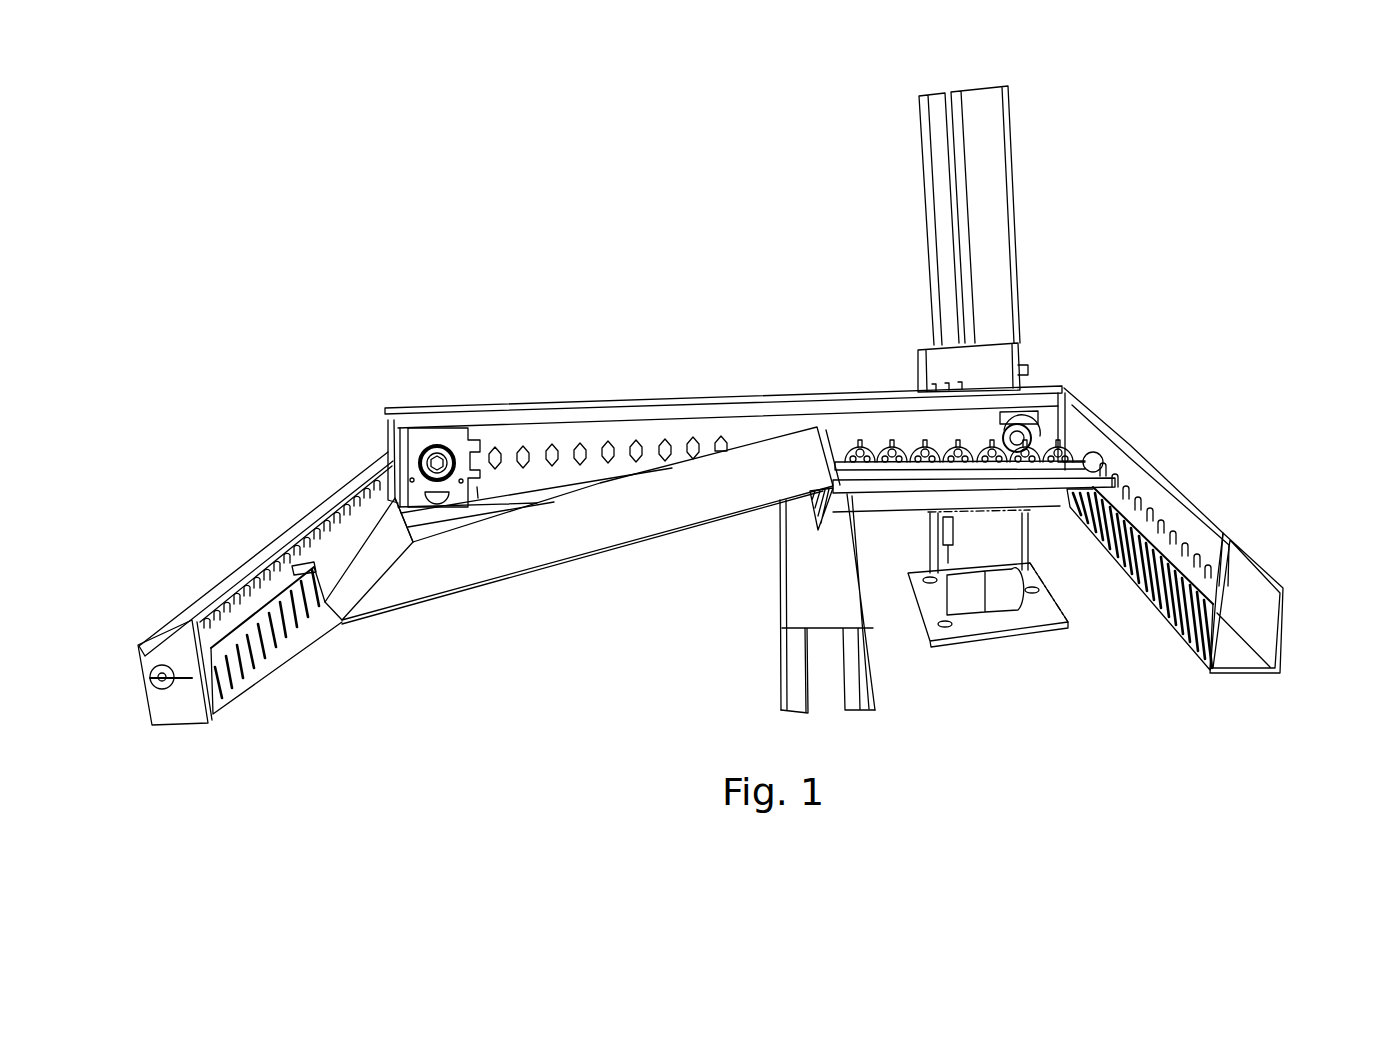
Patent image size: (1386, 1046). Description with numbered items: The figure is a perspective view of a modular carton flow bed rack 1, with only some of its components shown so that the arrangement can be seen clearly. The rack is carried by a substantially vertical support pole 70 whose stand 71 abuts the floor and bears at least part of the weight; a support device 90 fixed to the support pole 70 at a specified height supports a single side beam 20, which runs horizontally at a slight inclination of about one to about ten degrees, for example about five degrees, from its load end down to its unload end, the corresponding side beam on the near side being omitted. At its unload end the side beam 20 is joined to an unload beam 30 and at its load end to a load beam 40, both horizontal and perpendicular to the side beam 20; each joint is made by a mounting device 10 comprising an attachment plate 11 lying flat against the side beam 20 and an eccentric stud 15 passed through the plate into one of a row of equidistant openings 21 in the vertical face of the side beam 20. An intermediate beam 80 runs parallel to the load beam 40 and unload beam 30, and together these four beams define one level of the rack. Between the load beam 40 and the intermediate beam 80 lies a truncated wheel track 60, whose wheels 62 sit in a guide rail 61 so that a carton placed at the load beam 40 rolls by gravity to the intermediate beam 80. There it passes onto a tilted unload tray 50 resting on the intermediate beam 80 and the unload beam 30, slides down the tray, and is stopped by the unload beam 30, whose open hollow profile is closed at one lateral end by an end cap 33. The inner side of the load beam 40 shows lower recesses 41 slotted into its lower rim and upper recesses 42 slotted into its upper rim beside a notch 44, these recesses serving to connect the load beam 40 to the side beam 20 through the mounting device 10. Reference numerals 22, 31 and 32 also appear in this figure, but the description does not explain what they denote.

The carton flow bed rack 1 is at (566, 134).
The mounting device 10 is at (410, 445).
The attachment plate 11 is at (468, 497).
The eccentric stud 15 is at (445, 453).
The side beam 20 is at (625, 437).
The opening 21 is at (523, 457).
The end plate 22 is at (393, 452).
The unload beam 30 is at (268, 597).
The slots 31 is at (277, 635).
The side wall 32 is at (227, 607).
The end cap 33 is at (193, 715).
The load beam 40 is at (1168, 500).
The lower recesses 41 is at (1200, 650).
The upper recesses 42 is at (1187, 550).
The notch 44 is at (1213, 593).
The unload tray 50 is at (540, 550).
The wheel track 60 is at (1037, 477).
The guide rail 61 is at (910, 481).
The wheels 62 is at (863, 447).
The support pole 70 is at (990, 218).
The stand 71 is at (1033, 617).
The intermediate beam 80 is at (800, 592).
The support device 90 is at (940, 375).